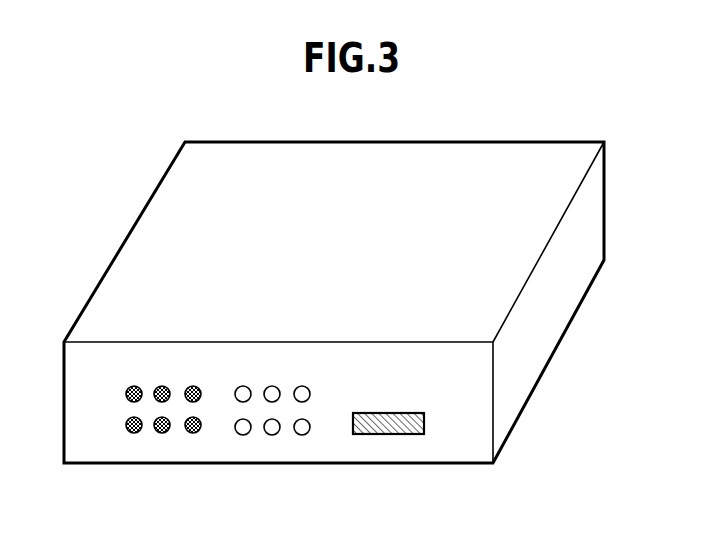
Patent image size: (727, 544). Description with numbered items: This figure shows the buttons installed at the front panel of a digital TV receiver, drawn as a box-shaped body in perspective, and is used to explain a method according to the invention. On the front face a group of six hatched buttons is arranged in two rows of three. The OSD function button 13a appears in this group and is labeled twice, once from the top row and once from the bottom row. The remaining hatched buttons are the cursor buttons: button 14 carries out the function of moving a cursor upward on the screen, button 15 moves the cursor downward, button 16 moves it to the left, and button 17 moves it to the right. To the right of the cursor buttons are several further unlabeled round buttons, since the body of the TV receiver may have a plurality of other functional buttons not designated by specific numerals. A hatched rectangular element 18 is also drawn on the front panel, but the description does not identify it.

The OSD function button 13a is at (134, 386).
The upward cursor button 14 is at (162, 386).
The downward cursor button 15 is at (195, 386).
The left cursor button 16 is at (162, 433).
The right cursor button 17 is at (197, 432).
The connector port 18 is at (425, 423).